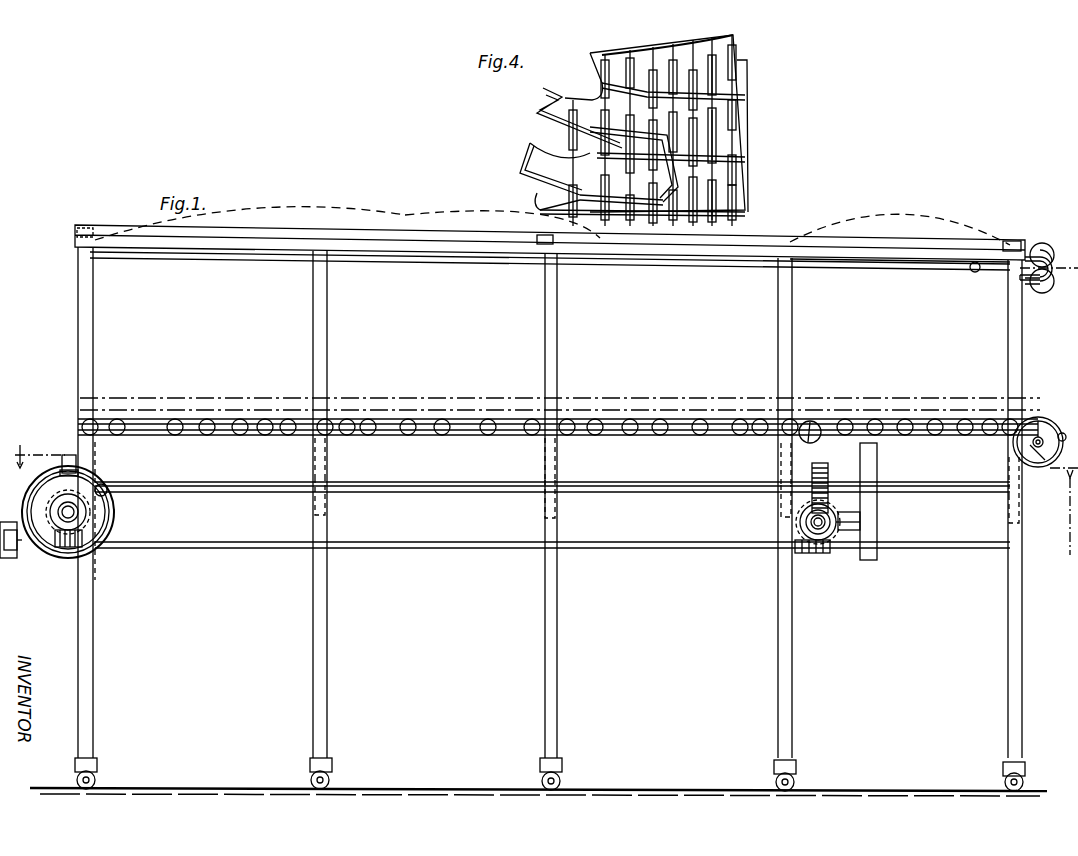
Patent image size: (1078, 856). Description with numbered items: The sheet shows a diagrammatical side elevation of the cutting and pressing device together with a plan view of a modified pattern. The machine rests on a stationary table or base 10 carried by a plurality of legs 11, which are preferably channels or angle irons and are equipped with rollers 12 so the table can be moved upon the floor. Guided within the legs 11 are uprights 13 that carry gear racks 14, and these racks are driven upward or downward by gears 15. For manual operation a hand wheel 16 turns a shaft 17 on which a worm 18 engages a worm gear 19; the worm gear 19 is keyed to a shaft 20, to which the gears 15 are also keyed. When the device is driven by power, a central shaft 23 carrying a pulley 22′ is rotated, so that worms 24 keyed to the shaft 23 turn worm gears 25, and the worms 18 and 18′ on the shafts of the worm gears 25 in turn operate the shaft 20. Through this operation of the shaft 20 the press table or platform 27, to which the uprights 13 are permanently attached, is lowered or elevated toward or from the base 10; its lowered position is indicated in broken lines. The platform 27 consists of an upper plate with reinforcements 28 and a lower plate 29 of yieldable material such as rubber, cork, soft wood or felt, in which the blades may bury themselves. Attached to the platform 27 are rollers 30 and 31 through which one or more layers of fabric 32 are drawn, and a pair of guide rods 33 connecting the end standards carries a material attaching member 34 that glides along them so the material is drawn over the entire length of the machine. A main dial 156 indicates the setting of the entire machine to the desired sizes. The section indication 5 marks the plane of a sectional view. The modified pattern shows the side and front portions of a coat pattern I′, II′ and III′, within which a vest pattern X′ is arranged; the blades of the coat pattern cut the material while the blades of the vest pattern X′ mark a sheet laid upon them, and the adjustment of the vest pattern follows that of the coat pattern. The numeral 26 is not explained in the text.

In FIG. 1, the section line 5 is at (539, 486).
In FIG. 1, the stationary table 10 is at (390, 440).
In FIG. 1, the legs 11 is at (93, 640).
In FIG. 1, the rollers 12 is at (98, 778).
In FIG. 1, the uprights 13 is at (93, 348).
In FIG. 1, the gear racks 14 is at (328, 506).
In FIG. 1, the gears 15 is at (328, 470).
In FIG. 1, the hand wheel 16 is at (88, 508).
In FIG. 1, the shaft 17 is at (78, 510).
In FIG. 1, the worm 18 is at (105, 540).
In FIG. 1, the worm 18′ is at (796, 522).
In FIG. 1, the worm gear 19 is at (78, 460).
In FIG. 1, the shaft 20 is at (430, 484).
In FIG. 1, the pulley 22′ is at (17, 553).
In FIG. 1, the central shaft 23 is at (258, 548).
In FIG. 1, the worms 24 is at (90, 555).
In FIG. 1, the worm gears 25 is at (92, 518).
In FIG. 1, the support bracket 26 is at (878, 522).
In FIG. 1, the press table 27 is at (77, 232).
In FIG. 1, the reinforcements 28 is at (95, 230).
In FIG. 1, the lower plate 29 is at (80, 243).
In FIG. 1, the rollers 30 is at (1036, 245).
In FIG. 1, the rollers 31 is at (1025, 285).
In FIG. 1, the fabric 32 is at (1056, 275).
In FIG. 1, the guide rods 33 is at (840, 268).
In FIG. 1, the material attaching member 34 is at (972, 270).
In FIG. 1, the main dial 156 is at (845, 388).
In FIG. 4, the coat pattern side portion I′ is at (720, 72).
In FIG. 4, the coat pattern front portion II′ is at (720, 136).
In FIG. 4, the coat pattern front portion III′ is at (720, 192).
In FIG. 4, the vest pattern X′ is at (545, 190).